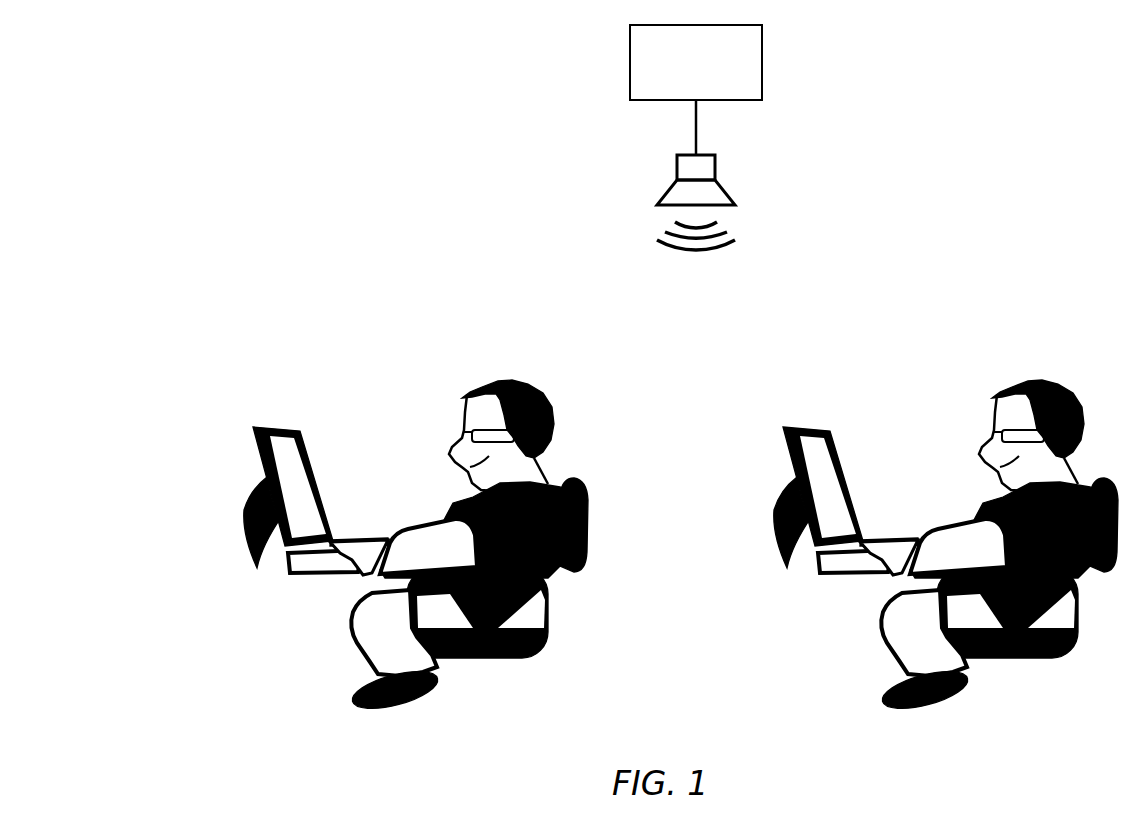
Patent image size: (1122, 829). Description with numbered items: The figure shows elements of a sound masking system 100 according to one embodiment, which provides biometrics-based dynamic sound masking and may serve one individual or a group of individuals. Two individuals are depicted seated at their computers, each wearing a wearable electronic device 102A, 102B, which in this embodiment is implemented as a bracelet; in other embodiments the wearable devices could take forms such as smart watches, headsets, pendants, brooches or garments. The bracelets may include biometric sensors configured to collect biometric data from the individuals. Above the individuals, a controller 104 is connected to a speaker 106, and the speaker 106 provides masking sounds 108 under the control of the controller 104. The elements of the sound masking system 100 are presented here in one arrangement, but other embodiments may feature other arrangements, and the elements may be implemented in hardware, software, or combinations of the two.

The sound masking system 100 is at (323, 166).
The wearable electronic device 102A is at (366, 577).
The wearable electronic device 102B is at (946, 548).
The controller 104 is at (696, 62).
The speaker 106 is at (662, 192).
The masking sounds 108 is at (639, 233).